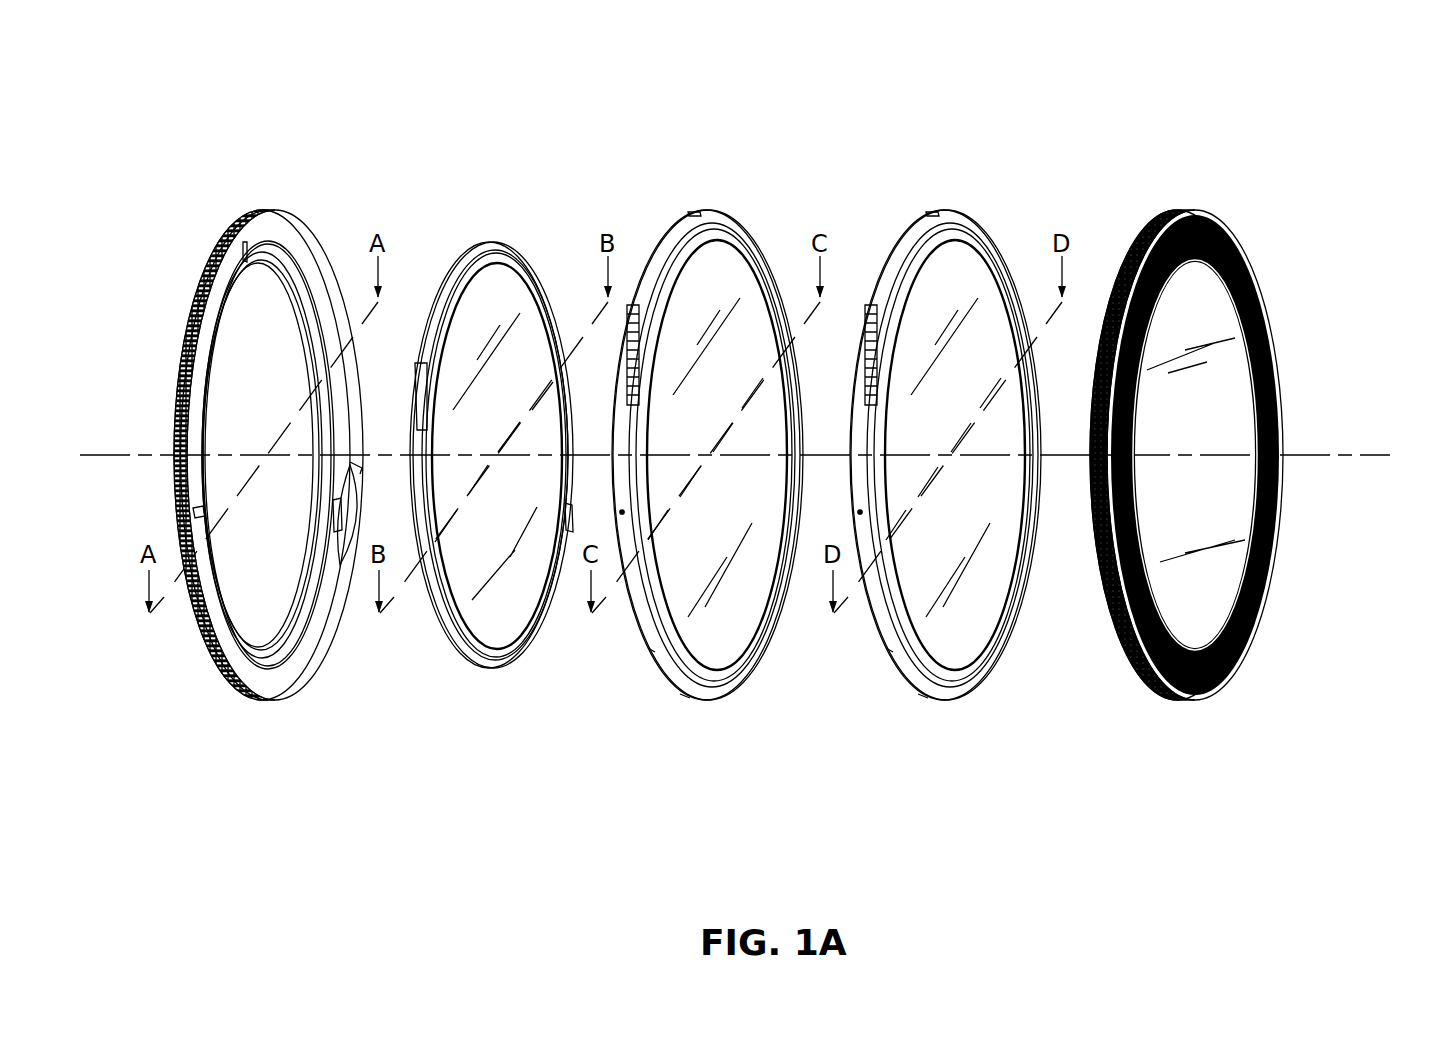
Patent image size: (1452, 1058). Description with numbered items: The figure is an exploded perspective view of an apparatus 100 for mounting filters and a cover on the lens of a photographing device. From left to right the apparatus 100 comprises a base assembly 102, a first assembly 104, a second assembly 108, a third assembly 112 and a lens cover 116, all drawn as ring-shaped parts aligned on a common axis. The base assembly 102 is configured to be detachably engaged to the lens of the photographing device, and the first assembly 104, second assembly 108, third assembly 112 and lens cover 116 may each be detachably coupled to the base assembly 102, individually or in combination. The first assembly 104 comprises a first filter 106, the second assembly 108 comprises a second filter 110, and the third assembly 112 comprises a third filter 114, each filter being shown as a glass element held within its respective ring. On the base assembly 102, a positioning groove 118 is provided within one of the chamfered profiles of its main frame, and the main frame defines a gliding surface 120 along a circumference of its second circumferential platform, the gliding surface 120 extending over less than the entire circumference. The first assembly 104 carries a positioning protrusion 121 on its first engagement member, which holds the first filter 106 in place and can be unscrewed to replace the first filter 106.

The apparatus 100 is at (789, 411).
The base assembly 102 is at (267, 420).
The first assembly 104 is at (520, 455).
The first filter 106 is at (497, 518).
The second assembly 108 is at (725, 443).
The second filter 110 is at (742, 506).
The third assembly 112 is at (961, 443).
The third filter 114 is at (979, 506).
The lens cover 116 is at (1186, 402).
The positioning groove 118 is at (370, 601).
The gliding surface 120 is at (201, 454).
The positioning protrusion 121 is at (597, 638).